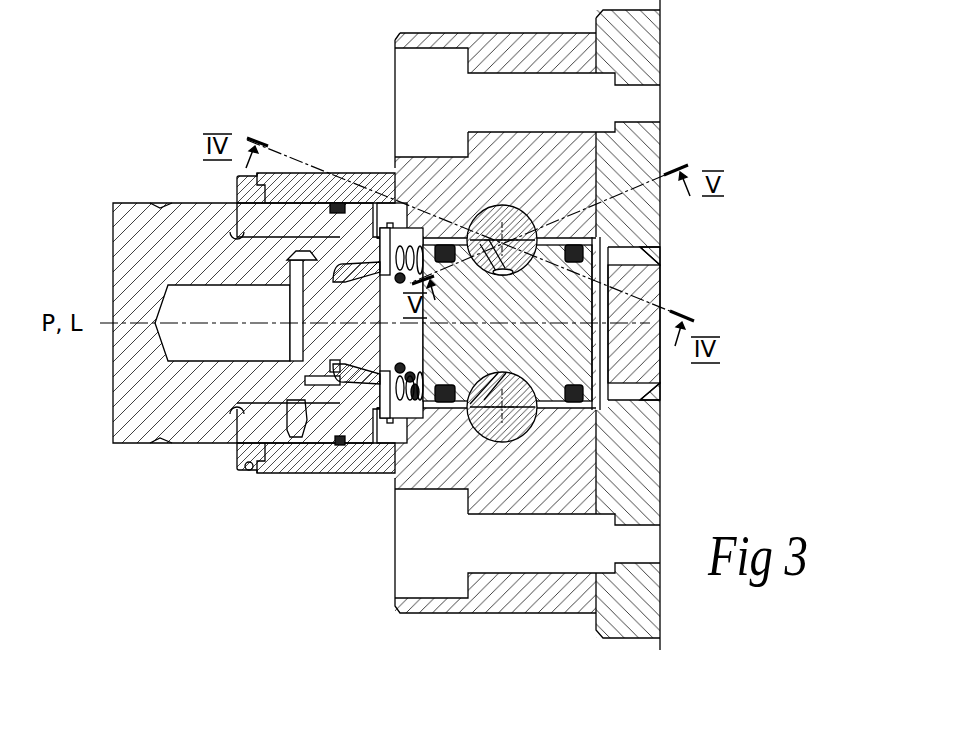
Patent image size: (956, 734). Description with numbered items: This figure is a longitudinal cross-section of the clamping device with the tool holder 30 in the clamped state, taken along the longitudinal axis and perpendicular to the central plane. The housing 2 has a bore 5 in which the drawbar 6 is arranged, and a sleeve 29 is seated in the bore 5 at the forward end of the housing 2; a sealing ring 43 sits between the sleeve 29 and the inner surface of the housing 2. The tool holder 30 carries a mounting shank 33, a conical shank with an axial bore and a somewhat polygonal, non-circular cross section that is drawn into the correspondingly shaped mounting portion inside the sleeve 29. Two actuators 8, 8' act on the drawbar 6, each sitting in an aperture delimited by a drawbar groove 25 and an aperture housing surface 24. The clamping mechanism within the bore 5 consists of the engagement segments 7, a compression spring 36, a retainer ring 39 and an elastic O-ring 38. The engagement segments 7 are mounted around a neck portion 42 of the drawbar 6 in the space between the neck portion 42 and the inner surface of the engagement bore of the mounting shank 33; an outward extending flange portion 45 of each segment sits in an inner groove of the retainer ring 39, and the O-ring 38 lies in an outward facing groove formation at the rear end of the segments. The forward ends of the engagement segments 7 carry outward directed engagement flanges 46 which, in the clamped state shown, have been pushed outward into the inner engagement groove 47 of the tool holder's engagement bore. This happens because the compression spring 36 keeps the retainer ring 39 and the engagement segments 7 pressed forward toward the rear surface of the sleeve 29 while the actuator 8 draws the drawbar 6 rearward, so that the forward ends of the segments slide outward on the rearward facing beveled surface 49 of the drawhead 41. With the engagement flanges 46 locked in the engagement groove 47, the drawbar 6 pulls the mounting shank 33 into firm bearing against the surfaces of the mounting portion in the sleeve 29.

The housing 2 is at (575, 462).
The bore 5 is at (603, 385).
The drawbar 6 is at (562, 408).
The engagement segments 7 is at (400, 364).
The actuator 8 is at (451, 186).
The actuator 8' is at (502, 512).
The aperture housing surface 24 is at (520, 213).
The drawbar groove 25 is at (520, 275).
The sleeve 29 is at (247, 470).
The tool holder 30 is at (133, 430).
The mounting shank 33 is at (263, 392).
The compression spring 36 is at (415, 402).
The elastic O-ring 38 is at (412, 382).
The retainer ring 39 is at (380, 385).
The drawhead 41 is at (317, 292).
The neck portion 42 is at (365, 300).
The sealing ring 43 is at (334, 446).
The flange portion 45 is at (385, 355).
The engagement flanges 46 is at (335, 366).
The engagement groove 47 is at (337, 378).
The beveled surface 49 is at (336, 378).